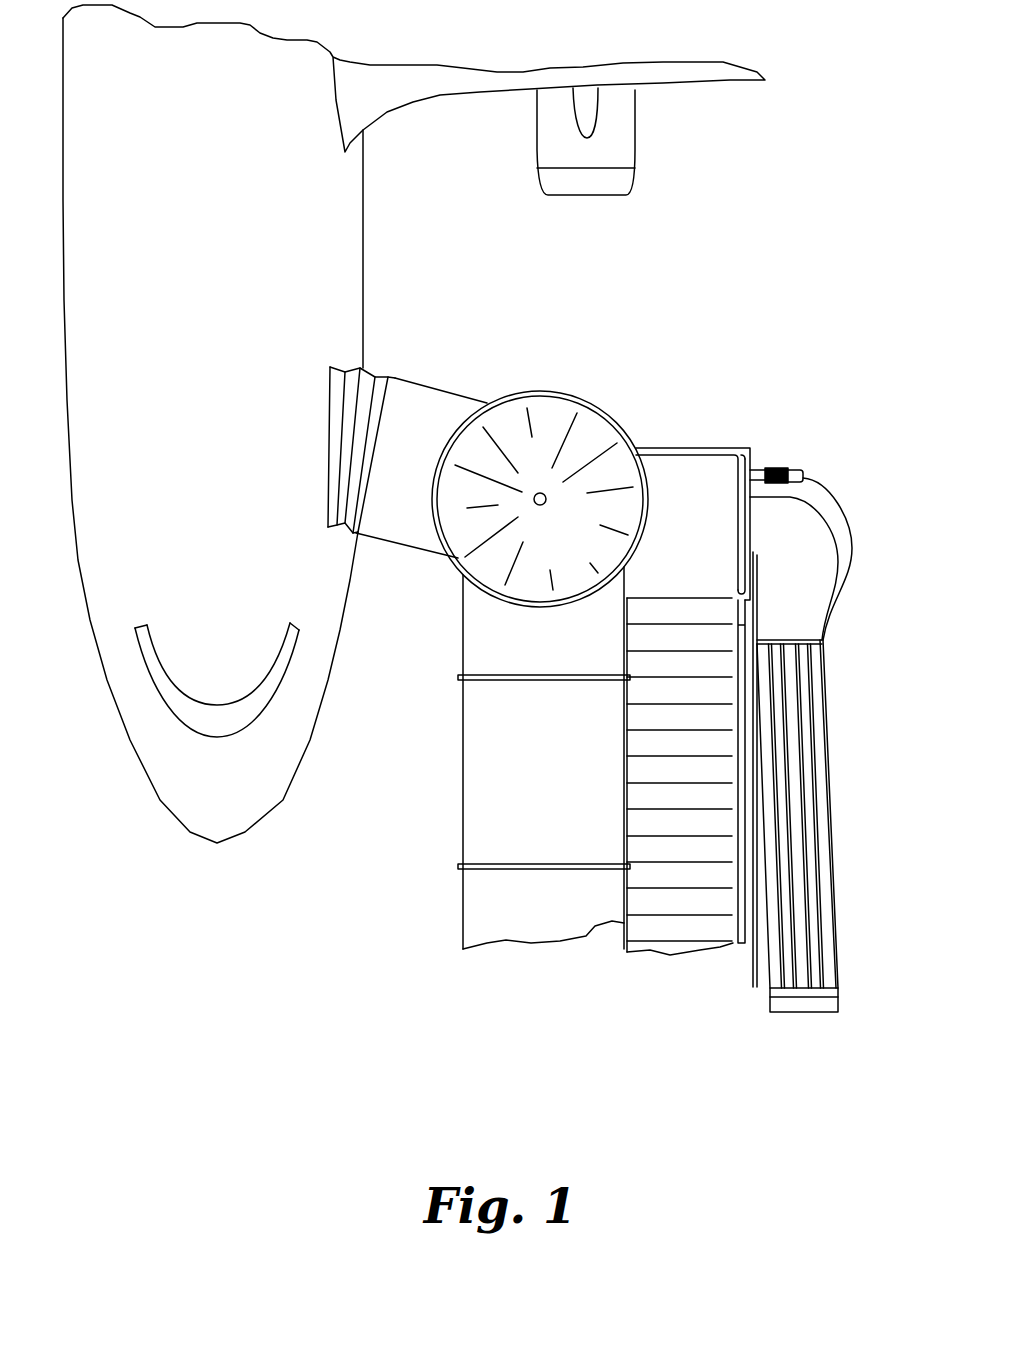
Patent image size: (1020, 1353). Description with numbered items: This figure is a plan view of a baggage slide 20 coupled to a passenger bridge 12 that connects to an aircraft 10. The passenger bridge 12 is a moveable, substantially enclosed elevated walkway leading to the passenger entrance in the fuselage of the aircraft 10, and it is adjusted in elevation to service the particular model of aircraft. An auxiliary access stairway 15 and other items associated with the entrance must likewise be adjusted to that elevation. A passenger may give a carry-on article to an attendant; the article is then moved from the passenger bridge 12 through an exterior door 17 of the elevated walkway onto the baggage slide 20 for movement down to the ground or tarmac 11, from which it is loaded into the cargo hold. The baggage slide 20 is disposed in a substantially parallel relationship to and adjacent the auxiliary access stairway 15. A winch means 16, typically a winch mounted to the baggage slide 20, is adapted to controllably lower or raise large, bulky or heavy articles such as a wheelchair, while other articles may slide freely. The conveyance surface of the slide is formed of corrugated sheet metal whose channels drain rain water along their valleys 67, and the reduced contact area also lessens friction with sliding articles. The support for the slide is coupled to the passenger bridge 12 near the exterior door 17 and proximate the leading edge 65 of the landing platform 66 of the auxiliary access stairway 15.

The aircraft 10 is at (107, 607).
The ground/tarmac 11 is at (343, 845).
The passenger bridge 12 is at (461, 637).
The auxiliary access stairway 15 is at (677, 925).
The winch means 16 is at (787, 468).
The exterior door 17 is at (650, 498).
The baggage slide 20 is at (821, 745).
The leading edge 65 is at (735, 447).
The landing platform 66 is at (695, 482).
The valleys of the channels 67 is at (815, 695).